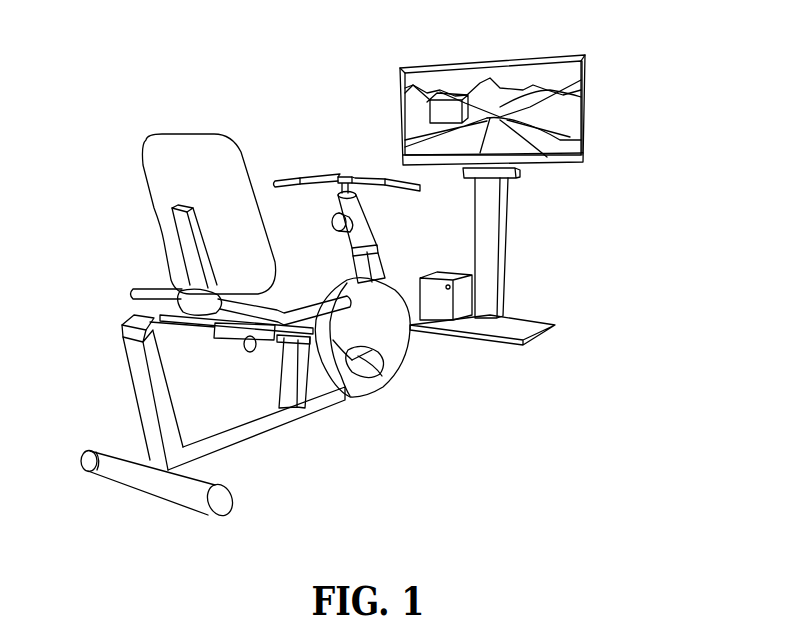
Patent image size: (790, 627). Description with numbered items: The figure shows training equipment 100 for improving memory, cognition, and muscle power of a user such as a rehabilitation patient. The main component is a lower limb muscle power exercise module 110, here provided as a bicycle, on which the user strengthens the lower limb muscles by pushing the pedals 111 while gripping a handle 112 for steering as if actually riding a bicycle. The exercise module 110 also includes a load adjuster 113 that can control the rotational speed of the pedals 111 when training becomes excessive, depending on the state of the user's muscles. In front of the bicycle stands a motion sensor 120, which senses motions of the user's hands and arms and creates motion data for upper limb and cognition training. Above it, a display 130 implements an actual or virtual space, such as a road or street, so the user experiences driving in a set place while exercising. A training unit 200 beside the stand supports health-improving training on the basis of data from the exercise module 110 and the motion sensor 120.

The training equipment 100 is at (77, 68).
The lower limb muscle power exercise module 110 is at (276, 72).
The pedals 111 is at (291, 181).
The handle 112 is at (405, 181).
The load adjuster 113 is at (334, 215).
The motion sensor 120 is at (497, 173).
The display 130 is at (568, 108).
The training unit 200 is at (448, 272).